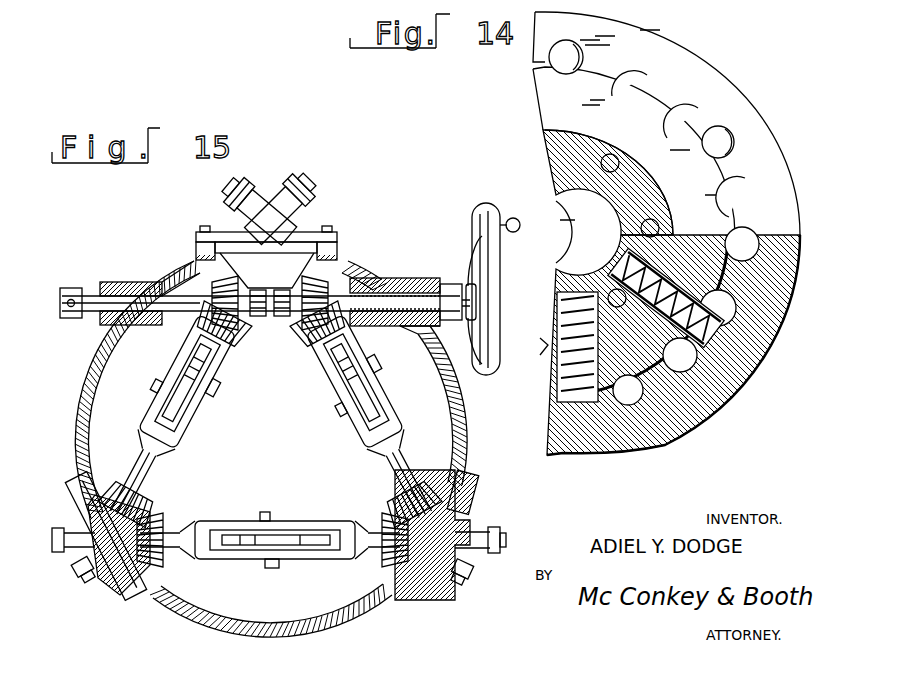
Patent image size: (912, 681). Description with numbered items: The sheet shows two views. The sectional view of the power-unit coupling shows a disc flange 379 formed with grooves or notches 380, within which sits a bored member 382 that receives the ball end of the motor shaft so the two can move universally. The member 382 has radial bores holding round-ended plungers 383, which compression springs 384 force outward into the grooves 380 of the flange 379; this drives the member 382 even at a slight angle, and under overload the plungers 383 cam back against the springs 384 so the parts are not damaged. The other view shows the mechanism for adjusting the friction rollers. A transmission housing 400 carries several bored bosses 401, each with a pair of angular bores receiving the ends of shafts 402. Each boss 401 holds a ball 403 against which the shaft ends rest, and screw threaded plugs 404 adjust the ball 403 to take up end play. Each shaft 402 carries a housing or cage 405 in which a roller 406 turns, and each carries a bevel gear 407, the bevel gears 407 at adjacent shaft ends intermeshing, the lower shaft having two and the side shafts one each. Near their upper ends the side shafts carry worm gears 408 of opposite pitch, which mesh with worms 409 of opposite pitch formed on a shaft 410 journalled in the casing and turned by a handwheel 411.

In FIG. 14, the peripheral flange 379 is at (648, 37).
In FIG. 14, the grooves or notches 380 is at (688, 97).
In FIG. 14, the member 382 is at (696, 168).
In FIG. 14, the round-ended plungers 383 is at (580, 410).
In FIG. 14, the compression springs 384 is at (600, 393).
In FIG. 15, the transmission housing 400 is at (452, 378).
In FIG. 15, the bored bosses 401 is at (470, 500).
In FIG. 15, the shafts 402 is at (410, 460).
In FIG. 15, the ball 403 is at (440, 545).
In FIG. 15, the screw threaded plugs 404 is at (472, 580).
In FIG. 15, the housing or cage 405 is at (213, 520).
In FIG. 15, the roller 406 is at (235, 542).
In FIG. 15, the bevel gear 407 is at (408, 493).
In FIG. 15, the worm gears 408 is at (290, 308).
In FIG. 15, the worms 409 is at (332, 287).
In FIG. 15, the shaft 410 is at (412, 298).
In FIG. 15, the handwheel 411 is at (484, 223).